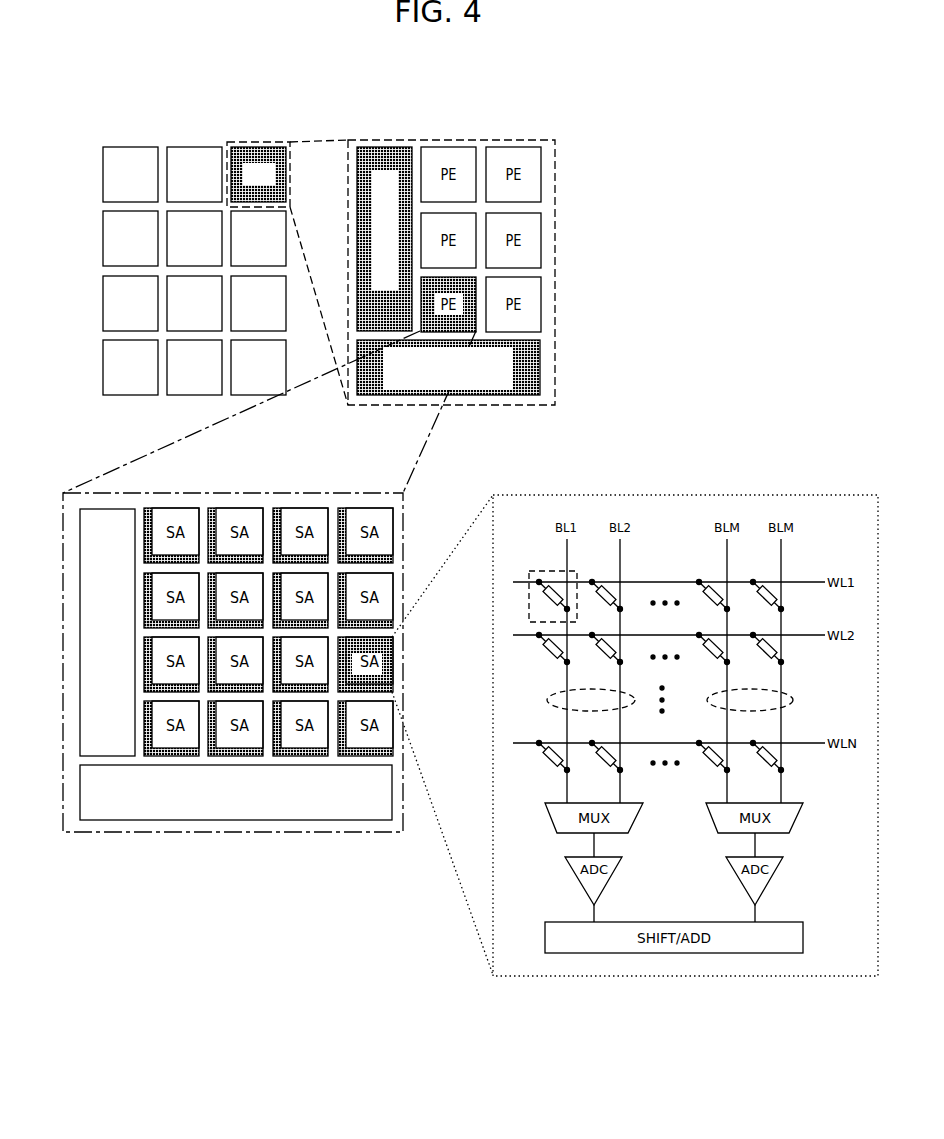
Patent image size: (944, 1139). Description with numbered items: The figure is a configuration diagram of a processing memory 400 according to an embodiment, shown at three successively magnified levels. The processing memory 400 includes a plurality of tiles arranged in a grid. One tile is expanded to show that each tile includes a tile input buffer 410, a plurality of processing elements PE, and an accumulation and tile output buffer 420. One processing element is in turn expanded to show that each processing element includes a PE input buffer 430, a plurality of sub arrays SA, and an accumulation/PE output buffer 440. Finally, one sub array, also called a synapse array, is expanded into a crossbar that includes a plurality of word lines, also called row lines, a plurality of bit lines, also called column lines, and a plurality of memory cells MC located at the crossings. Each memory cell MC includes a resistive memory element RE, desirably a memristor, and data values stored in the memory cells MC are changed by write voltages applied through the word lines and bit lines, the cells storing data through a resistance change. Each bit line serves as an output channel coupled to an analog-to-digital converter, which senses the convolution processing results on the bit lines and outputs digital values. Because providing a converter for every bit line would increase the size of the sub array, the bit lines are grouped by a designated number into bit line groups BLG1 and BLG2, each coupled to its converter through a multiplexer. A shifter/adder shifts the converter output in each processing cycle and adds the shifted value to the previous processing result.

The processing memory 400 is at (118, 78).
The tile input buffer 410 is at (385, 152).
The accumulation and tile output buffer 420 is at (541, 360).
The PE input buffer 430 is at (92, 520).
The accumulation/PE output buffer 440 is at (343, 813).
The memory cell MC is at (545, 570).
The resistive memory element RE is at (548, 597).
The bit line group BLG1 is at (559, 692).
The bit line group BLG2 is at (793, 700).